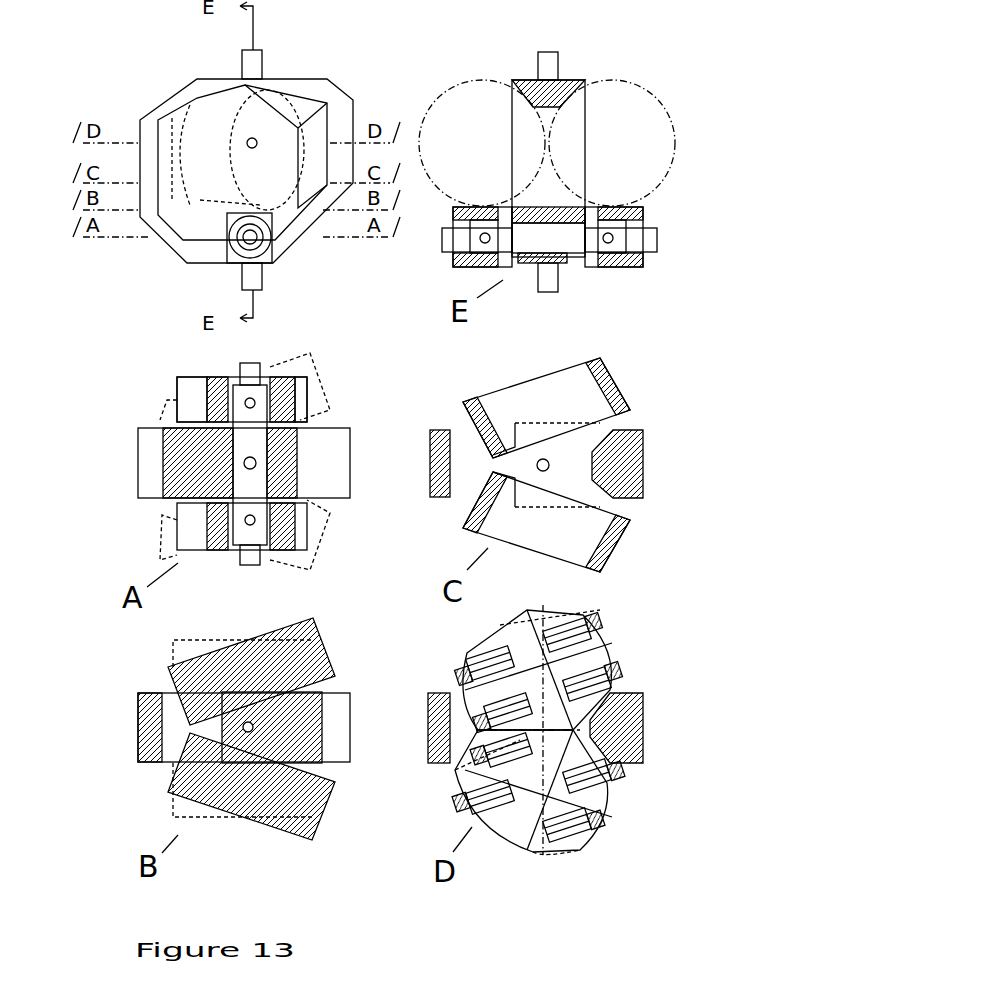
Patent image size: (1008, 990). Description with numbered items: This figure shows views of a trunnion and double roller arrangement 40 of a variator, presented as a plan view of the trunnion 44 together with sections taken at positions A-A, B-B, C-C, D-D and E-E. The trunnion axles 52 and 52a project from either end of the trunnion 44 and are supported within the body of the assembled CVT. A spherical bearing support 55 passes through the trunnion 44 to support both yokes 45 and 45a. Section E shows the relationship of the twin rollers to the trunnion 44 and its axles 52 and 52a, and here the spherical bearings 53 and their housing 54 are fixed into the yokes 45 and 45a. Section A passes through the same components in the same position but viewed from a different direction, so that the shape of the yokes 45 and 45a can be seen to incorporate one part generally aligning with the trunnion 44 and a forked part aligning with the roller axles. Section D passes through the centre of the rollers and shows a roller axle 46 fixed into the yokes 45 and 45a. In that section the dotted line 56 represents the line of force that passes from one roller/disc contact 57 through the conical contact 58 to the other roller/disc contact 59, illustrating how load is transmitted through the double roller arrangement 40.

The clamping assembly 40 is at (550, 858).
The trunnion 44 is at (170, 98).
The yoke 45 is at (205, 228).
The yoke 45a is at (640, 220).
The roller axle 46 is at (585, 652).
The trunnion axle 52 is at (260, 60).
The trunnion axle 52a is at (262, 283).
The spherical bearing 53 is at (610, 212).
The housing 54 is at (640, 263).
The spherical bearing support 55 is at (273, 247).
The dotted line 56 is at (527, 852).
The roller/disc contact 57 is at (543, 607).
The conical contact 58 is at (465, 778).
The roller/disc contact 59 is at (540, 860).